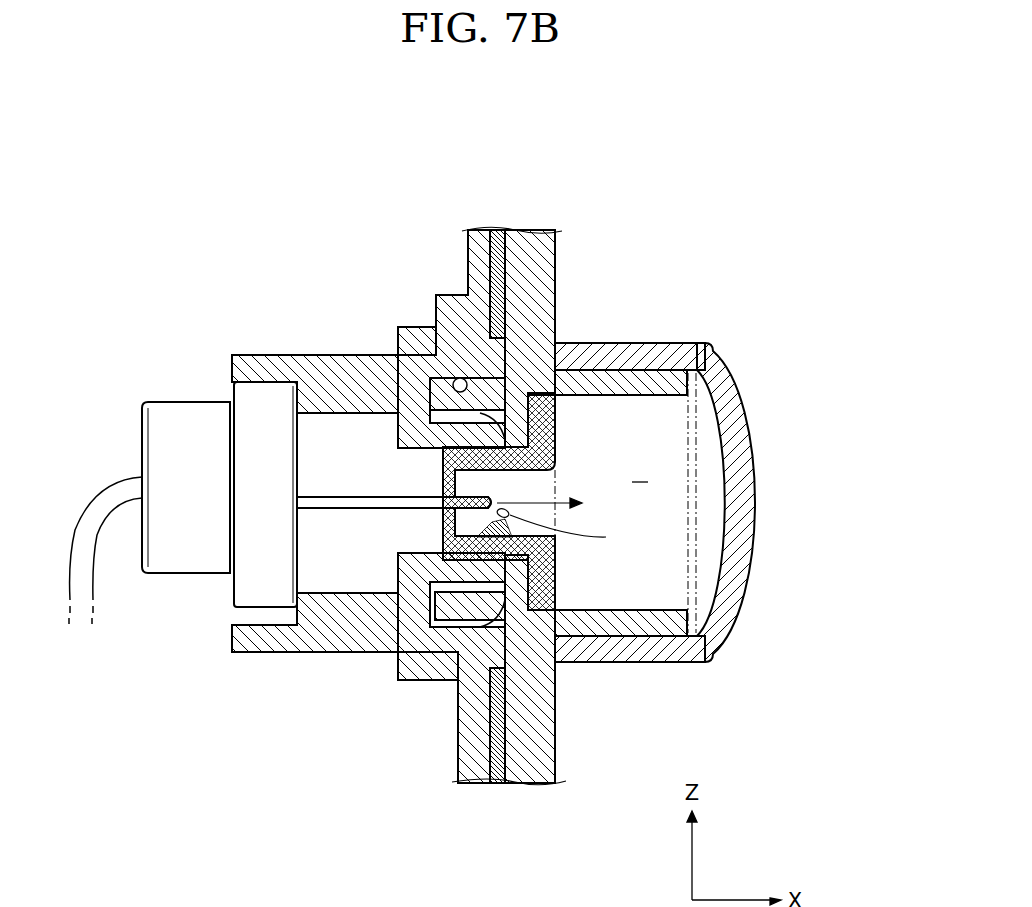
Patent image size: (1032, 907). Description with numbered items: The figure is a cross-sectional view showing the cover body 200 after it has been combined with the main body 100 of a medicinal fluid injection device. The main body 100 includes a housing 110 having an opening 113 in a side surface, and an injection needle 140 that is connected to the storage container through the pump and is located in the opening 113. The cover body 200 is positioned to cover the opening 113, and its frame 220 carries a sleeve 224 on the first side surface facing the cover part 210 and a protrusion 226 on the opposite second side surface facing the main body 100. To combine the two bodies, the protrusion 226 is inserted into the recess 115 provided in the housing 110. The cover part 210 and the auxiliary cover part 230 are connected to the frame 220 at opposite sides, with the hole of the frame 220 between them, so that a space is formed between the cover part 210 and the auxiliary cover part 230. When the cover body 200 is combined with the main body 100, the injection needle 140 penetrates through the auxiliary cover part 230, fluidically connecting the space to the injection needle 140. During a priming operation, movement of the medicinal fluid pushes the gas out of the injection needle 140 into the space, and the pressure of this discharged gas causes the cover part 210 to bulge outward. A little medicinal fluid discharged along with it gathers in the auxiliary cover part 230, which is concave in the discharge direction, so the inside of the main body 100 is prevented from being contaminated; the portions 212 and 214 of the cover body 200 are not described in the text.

The main body 100 is at (344, 474).
The housing 110 is at (478, 248).
The opening 113 is at (447, 398).
The recess 115 is at (460, 383).
The injection needle 140 is at (345, 505).
The cover body 200 is at (613, 456).
The cover part 210 is at (717, 518).
The dome portion of cap 212 is at (723, 605).
The side wall of cap 214 is at (650, 653).
The frame 220 is at (664, 506).
The sleeve 224 is at (645, 396).
The protrusion 226 is at (398, 328).
The auxiliary cover part 230 is at (440, 537).